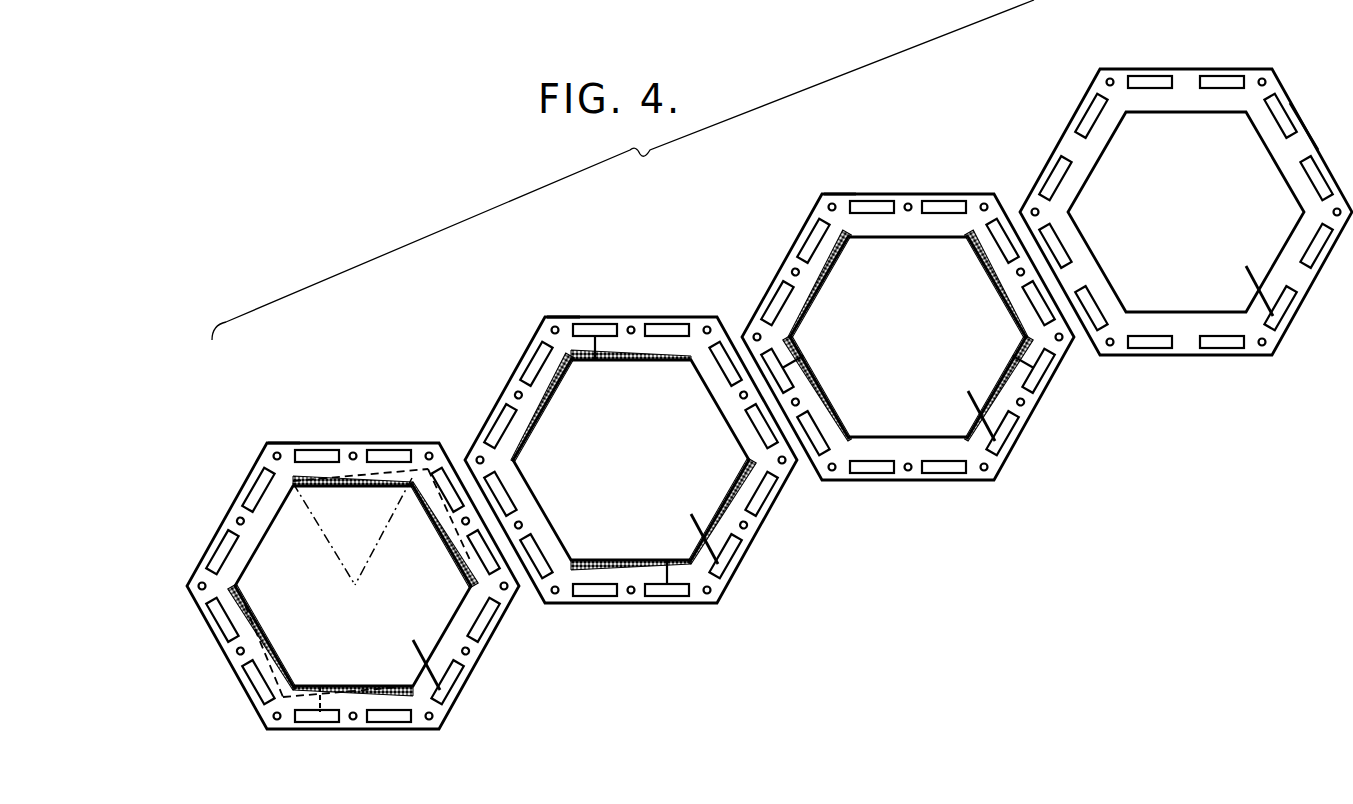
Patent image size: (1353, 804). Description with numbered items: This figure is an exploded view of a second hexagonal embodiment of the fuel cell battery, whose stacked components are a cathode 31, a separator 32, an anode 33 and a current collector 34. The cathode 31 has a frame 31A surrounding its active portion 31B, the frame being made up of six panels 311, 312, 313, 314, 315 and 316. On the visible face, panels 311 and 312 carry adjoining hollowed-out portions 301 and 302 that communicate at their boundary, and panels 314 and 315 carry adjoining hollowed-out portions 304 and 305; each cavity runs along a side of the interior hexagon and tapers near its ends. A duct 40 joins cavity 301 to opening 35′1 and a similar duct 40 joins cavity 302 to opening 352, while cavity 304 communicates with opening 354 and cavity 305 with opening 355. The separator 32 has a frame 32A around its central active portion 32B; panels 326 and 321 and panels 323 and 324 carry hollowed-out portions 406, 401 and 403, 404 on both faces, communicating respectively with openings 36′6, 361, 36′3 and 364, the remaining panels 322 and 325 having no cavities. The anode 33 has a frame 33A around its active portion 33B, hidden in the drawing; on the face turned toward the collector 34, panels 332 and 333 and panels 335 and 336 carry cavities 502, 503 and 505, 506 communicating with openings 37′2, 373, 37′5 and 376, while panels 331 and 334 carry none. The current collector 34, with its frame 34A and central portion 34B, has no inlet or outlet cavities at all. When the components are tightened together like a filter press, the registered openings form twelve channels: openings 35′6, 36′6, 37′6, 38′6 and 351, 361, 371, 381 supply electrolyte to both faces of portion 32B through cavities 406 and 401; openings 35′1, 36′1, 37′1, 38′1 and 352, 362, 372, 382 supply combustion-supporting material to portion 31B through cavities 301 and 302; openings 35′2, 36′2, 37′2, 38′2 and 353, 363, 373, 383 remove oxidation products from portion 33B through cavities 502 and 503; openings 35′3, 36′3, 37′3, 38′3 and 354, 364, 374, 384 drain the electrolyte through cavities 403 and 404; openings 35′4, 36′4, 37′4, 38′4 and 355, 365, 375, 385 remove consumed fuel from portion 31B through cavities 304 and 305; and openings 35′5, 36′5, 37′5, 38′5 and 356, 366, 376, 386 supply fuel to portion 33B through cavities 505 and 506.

The cathode 31 is at (224, 482).
The frame of the cathode 31A is at (289, 432).
The active portion of the cathode 31B is at (414, 652).
The panel 311 is at (355, 451).
The panel 312 is at (465, 525).
The positioning hole 313 is at (468, 655).
The panel 314 is at (353, 712).
The panel 315 is at (243, 652).
The positioning hole 316 is at (245, 528).
The opening 351 is at (318, 450).
The opening 352 is at (443, 482).
The opening 353 is at (484, 624).
The opening 354 is at (389, 712).
The opening 355 is at (262, 680).
The opening 356 is at (222, 548).
The opening 35′1 is at (390, 450).
The opening 35′2 is at (484, 556).
The opening 35′3 is at (450, 684).
The opening 35′4 is at (320, 712).
The opening 35′5 is at (226, 620).
The opening 35′6 is at (258, 486).
The hollowed-out portion 301 is at (330, 488).
The hollowed-out portion 302 is at (446, 505).
The hollowed-out portion 304 is at (376, 698).
The hollowed-out portion 305 is at (260, 632).
The duct 40 is at (397, 472).
The separator 32 is at (504, 337).
The frame of the separator 32A is at (557, 308).
The central active portion of the separator 32B is at (690, 525).
The panel 321 is at (632, 326).
The positioning hole 322 is at (742, 398).
The panel 323 is at (746, 527).
The panel 324 is at (632, 594).
The positioning hole 325 is at (520, 524).
The panel 326 is at (518, 398).
The opening 361 is at (595, 326).
The opening 362 is at (725, 368).
The opening 363 is at (763, 496).
The opening 364 is at (667, 594).
The opening 365 is at (538, 554).
The opening 366 is at (500, 422).
The opening 36′1 is at (667, 326).
The opening 36′2 is at (760, 430).
The opening 36′3 is at (728, 558).
The opening 36′4 is at (596, 594).
The opening 36′5 is at (502, 496).
The opening 36′6 is at (536, 360).
The hollowed-out portion 401 is at (612, 354).
The hollowed-out portion 403 is at (715, 535).
The hollowed-out portion 404 is at (652, 560).
The hollowed-out portion 406 is at (530, 425).
The anode 33 is at (774, 220).
The frame of the anode 33A is at (839, 184).
The active portion of the anode 33B is at (965, 400).
The positioning hole 331 is at (908, 203).
The panel 332 is at (1020, 275).
The panel 333 is at (1023, 405).
The positioning hole 334 is at (908, 471).
The panel 335 is at (797, 402).
The panel 336 is at (797, 275).
The opening 371 is at (872, 203).
The opening 372 is at (1002, 245).
The opening 373 is at (1040, 375).
The opening 374 is at (944, 471).
The opening 375 is at (815, 433).
The opening 376 is at (777, 299).
The opening 37′1 is at (944, 203).
The opening 37′2 is at (1038, 307).
The opening 37′3 is at (1005, 437).
The opening 37′4 is at (872, 471).
The opening 37′5 is at (780, 368).
The opening 37′6 is at (813, 237).
The cavity 502 is at (1010, 292).
The cavity 503 is at (1010, 355).
The cavity 505 is at (800, 380).
The cavity 506 is at (808, 295).
The current collector 34 is at (1044, 112).
The first face of frame 34 34A is at (1312, 128).
The second face of frame 34 34B is at (1238, 280).
The opening 381 is at (1150, 88).
The opening 382 is at (1280, 122).
The opening 383 is at (1315, 250).
The opening 384 is at (1222, 346).
The opening 385 is at (1092, 306).
The opening 386 is at (1054, 175).
The opening 38′1 is at (1222, 88).
The opening 38′2 is at (1315, 182).
The opening 38′3 is at (1280, 305).
The opening 38′4 is at (1150, 346).
The opening 38′5 is at (1057, 244).
The opening 38′6 is at (1090, 112).